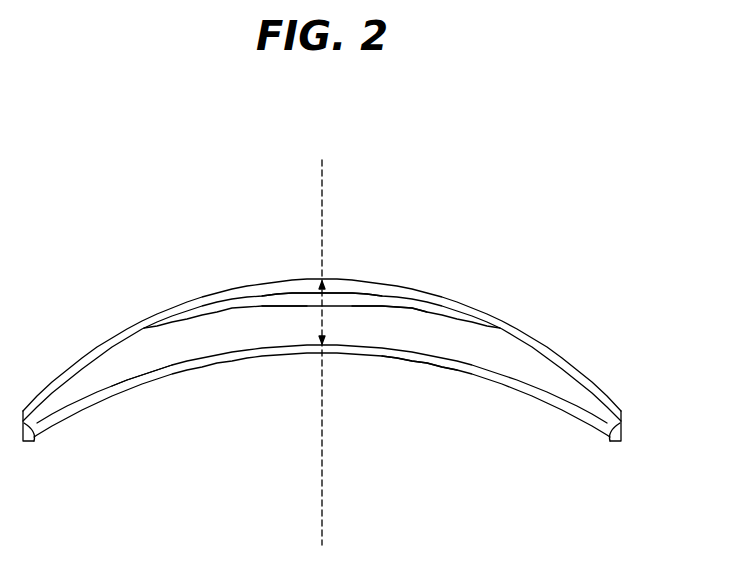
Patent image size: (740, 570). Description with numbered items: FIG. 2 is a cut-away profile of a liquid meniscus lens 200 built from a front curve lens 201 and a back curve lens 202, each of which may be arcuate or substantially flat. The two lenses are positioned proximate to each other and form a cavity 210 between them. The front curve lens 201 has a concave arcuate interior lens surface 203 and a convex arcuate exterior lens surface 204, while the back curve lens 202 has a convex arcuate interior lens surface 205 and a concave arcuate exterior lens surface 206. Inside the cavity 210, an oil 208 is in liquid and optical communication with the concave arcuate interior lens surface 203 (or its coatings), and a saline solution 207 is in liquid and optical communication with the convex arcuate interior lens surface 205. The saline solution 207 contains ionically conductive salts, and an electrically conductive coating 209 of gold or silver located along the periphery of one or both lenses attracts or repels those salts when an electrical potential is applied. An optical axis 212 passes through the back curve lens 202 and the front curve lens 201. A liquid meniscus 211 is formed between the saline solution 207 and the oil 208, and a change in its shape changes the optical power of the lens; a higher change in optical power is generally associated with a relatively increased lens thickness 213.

The liquid meniscus lens 200 is at (529, 173).
The front curve lens 201 is at (535, 338).
The back curve lens 202 is at (417, 364).
The concave arcuate interior lens surface 203 is at (193, 312).
The convex arcuate exterior lens surface 204 is at (284, 280).
The convex arcuate interior lens surface 205 is at (144, 375).
The concave arcuate exterior lens surface 206 is at (222, 364).
The saline solution 207 is at (392, 330).
The oil 208 is at (338, 300).
The electrically conductive coating 209 is at (48, 422).
The cavity 210 is at (156, 356).
The liquid meniscus 211 is at (288, 312).
The optical axis 212 is at (327, 180).
The lens thickness 213 is at (326, 320).